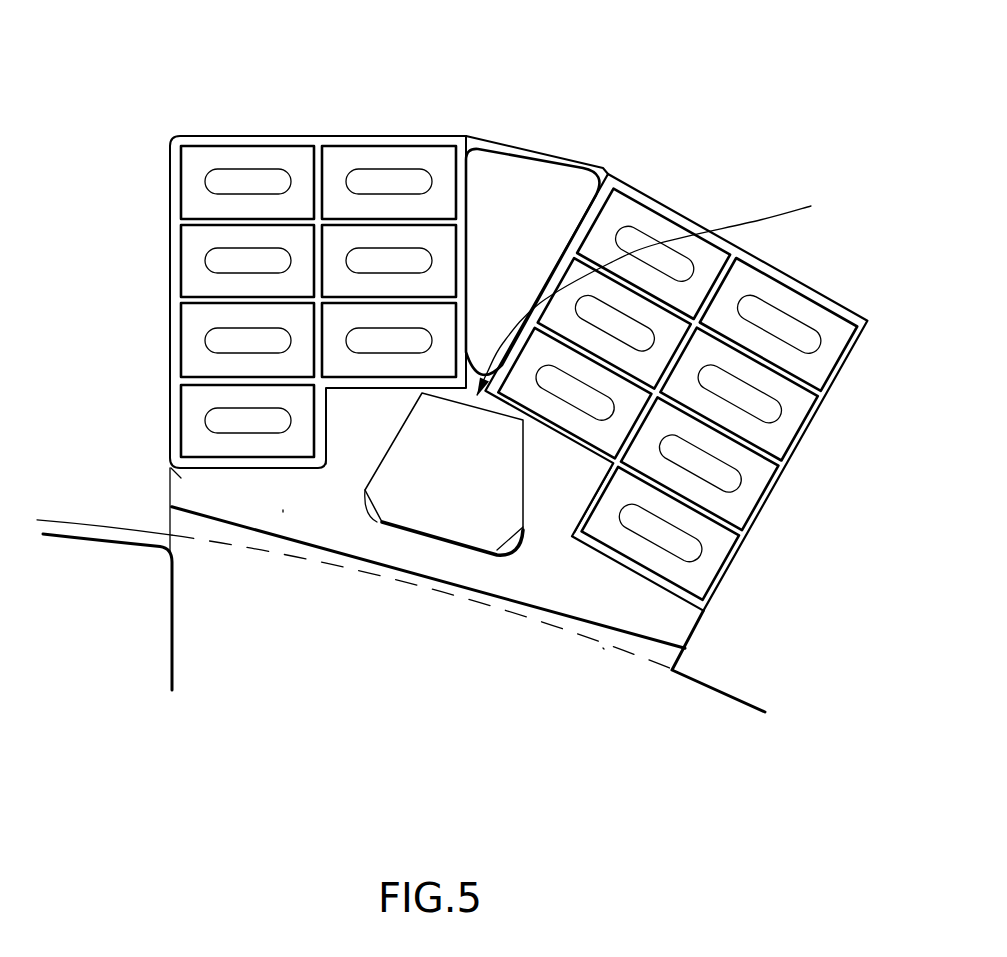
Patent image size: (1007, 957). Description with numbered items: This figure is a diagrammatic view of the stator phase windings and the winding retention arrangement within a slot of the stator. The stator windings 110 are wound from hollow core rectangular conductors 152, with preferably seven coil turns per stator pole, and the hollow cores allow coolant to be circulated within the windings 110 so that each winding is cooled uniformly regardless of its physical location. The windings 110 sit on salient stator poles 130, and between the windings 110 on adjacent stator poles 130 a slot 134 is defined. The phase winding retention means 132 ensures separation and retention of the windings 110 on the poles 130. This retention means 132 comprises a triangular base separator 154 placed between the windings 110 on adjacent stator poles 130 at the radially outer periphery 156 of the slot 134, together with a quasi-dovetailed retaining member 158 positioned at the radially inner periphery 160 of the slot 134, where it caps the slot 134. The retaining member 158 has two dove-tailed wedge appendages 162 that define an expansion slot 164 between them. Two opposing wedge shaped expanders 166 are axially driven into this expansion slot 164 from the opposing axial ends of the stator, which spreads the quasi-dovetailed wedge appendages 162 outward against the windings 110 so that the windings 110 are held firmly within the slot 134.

The stator windings 110 is at (337, 115).
The salient stator poles 130 is at (120, 385).
The phase winding retention means 132 is at (350, 603).
The slot 134 is at (440, 588).
The hollow core rectangular conductors 152 is at (625, 210).
The triangular base separator 154 is at (490, 183).
The radially outer periphery 156 is at (548, 157).
The quasi-dovetailed retaining member 158 is at (282, 510).
The radially inner periphery 160 is at (603, 648).
The dove-tailed wedge appendages 162 is at (392, 428).
The expansion slot 164 is at (673, 293).
The wedge shaped expanders 166 is at (480, 483).